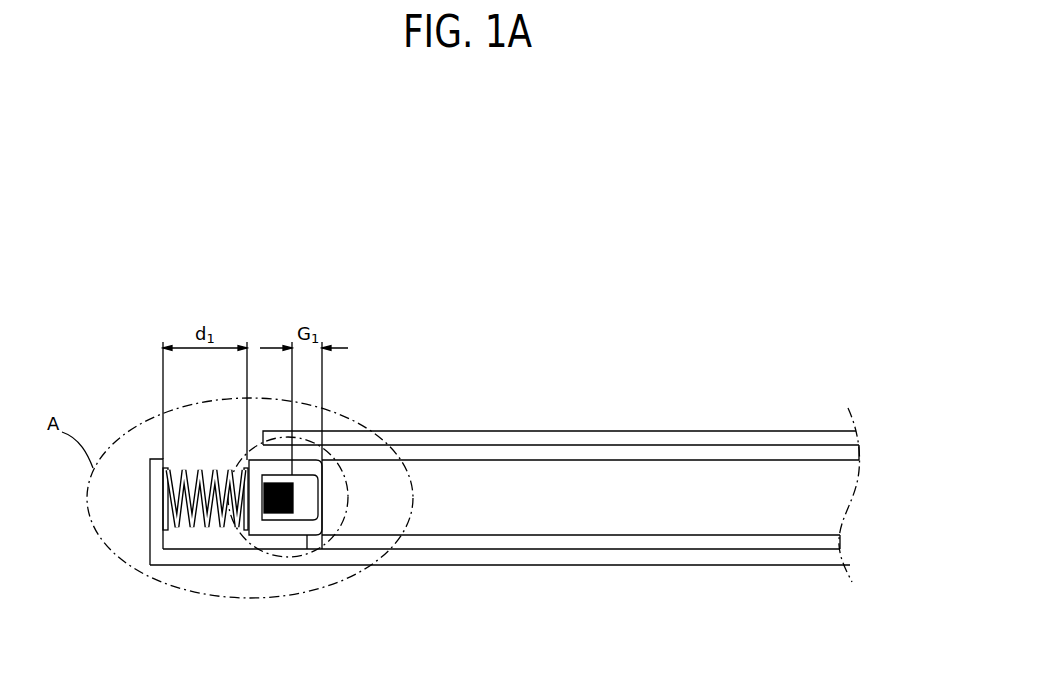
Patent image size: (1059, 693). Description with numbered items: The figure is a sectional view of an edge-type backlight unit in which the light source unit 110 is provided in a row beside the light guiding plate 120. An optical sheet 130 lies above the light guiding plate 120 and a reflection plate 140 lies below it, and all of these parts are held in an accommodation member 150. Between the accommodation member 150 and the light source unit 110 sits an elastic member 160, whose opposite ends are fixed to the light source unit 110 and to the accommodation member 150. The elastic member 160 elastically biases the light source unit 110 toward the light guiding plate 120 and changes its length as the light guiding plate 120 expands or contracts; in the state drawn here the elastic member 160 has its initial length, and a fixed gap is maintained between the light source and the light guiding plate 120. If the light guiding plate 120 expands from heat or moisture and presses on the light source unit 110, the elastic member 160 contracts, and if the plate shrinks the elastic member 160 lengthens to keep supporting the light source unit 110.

The light source unit 110 is at (273, 540).
The light guiding plate 120 is at (510, 517).
The optical sheet 130 is at (561, 431).
The reflection plate 140 is at (647, 543).
The accommodation member 150 is at (363, 555).
The elastic member 160 is at (202, 523).